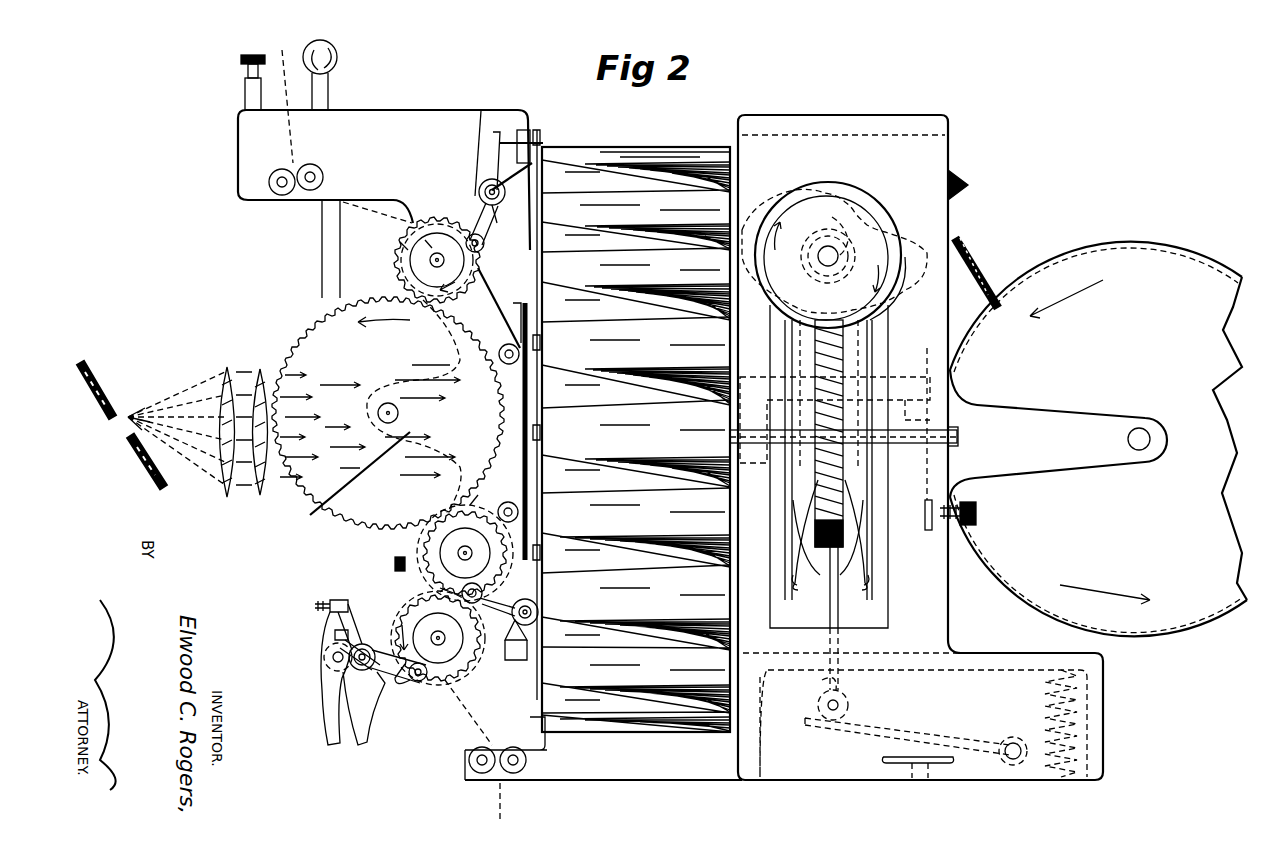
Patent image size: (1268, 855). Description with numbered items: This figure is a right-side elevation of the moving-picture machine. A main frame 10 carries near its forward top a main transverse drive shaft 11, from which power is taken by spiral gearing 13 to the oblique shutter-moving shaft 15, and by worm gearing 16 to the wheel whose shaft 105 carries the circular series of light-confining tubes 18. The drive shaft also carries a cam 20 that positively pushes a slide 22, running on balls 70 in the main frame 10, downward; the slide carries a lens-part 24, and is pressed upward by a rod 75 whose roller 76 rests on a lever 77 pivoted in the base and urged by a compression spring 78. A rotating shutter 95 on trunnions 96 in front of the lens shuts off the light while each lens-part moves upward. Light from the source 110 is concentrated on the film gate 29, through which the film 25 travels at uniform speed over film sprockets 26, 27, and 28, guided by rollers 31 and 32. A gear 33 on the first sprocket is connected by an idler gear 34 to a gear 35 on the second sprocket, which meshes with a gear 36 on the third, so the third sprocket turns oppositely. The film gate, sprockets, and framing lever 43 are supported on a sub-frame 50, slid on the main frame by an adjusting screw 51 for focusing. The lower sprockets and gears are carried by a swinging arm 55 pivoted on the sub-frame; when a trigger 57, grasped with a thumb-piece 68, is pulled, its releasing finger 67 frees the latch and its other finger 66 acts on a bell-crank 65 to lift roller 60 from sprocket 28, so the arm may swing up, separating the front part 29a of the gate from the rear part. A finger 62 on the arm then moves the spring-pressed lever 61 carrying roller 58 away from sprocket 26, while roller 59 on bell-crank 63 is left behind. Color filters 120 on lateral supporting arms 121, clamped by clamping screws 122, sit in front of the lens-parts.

The main frame 10 is at (924, 162).
The main transverse drive shaft 11 is at (826, 252).
The spiral gearing 13 is at (962, 182).
The shutter-moving shaft 15 is at (976, 276).
The worm gearing 16 is at (864, 220).
The light-confining tubes 18 is at (680, 150).
The cam 20 is at (908, 258).
The slide 22 is at (856, 348).
The lens-part 24 is at (940, 392).
The film 25 is at (290, 100).
The film sprocket 26 is at (416, 262).
The film sprocket 27 is at (446, 548).
The film sprocket 28 is at (426, 632).
The film gate 29 is at (522, 406).
The front part of film gate 29a is at (517, 492).
The guide roller 31 is at (492, 350).
The guide roller 32 is at (470, 505).
The gear 33 is at (396, 270).
The idler gear 34 is at (320, 345).
The gear 35 is at (440, 520).
The gear 36 is at (470, 682).
The framing lever 43 is at (338, 55).
The sub-frame 50 is at (410, 130).
The adjusting screw 51 is at (396, 564).
The swinging arm 55 is at (393, 706).
The trigger 57 is at (364, 735).
The spring-pressed roller 58 is at (486, 246).
The spring-pressed roller 59 is at (456, 595).
The spring-pressed roller 60 is at (425, 690).
The spring-pressed lever 61 is at (495, 130).
The finger 62 is at (470, 213).
The spring-pressed bell-crank 63 is at (500, 604).
The spring-pressed bell-crank 65 is at (395, 678).
The releasing finger 66 is at (338, 629).
The releasing finger 67 is at (522, 414).
The thumb-piece 68 is at (332, 716).
The balls 70 is at (866, 582).
The rod 75 is at (831, 619).
The roller 76 is at (850, 705).
The lever 77 is at (922, 742).
The compression spring 78 is at (1046, 700).
The rotating shutter 95 is at (1133, 278).
The trunnions 96 is at (1144, 437).
The shaft 105 is at (893, 447).
The light source 110 is at (127, 413).
The color filters 120 is at (931, 352).
The lateral supporting arms 121 is at (935, 527).
The clamping screws 122 is at (978, 512).